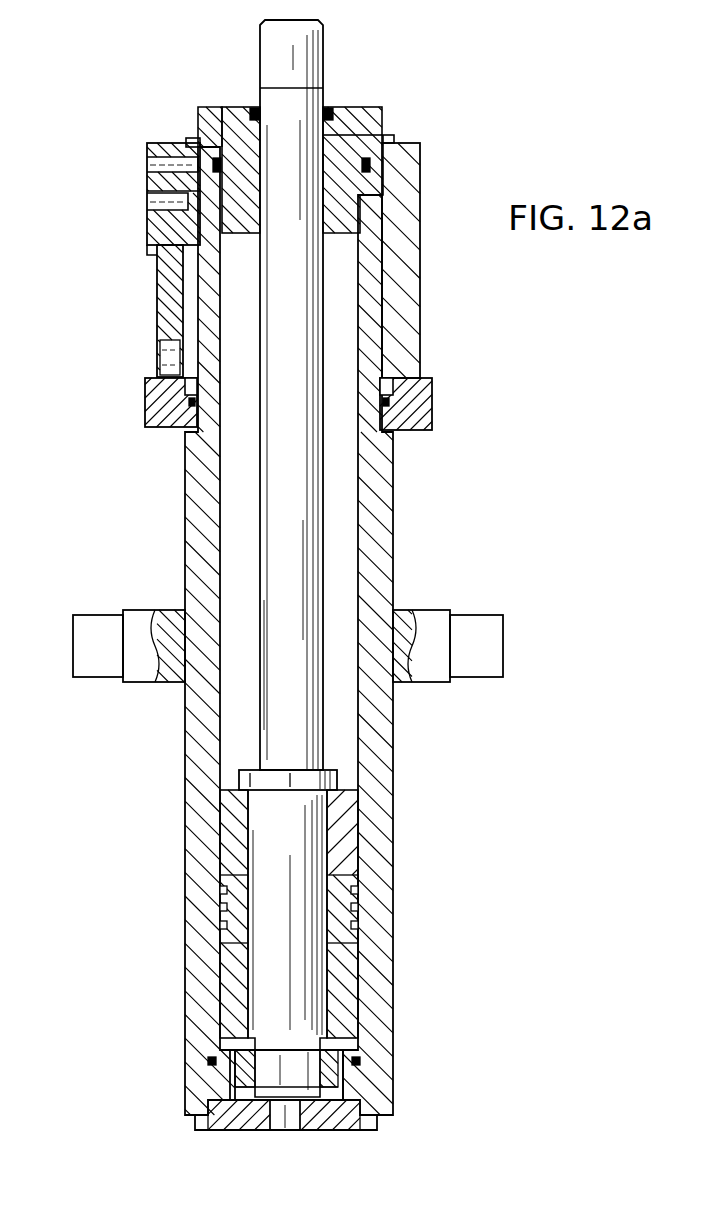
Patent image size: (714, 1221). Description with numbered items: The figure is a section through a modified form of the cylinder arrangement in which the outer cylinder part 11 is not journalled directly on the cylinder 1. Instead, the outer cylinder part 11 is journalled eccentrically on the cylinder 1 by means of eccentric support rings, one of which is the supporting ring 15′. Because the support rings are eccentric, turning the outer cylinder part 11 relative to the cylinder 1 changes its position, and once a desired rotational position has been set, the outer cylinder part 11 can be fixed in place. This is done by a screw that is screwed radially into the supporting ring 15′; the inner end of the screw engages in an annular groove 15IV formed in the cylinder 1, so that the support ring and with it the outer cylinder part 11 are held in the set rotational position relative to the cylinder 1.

The cylinder 1 is at (385, 537).
The outer cylinder part 11 is at (412, 328).
The annular groove 15IV is at (427, 142).
The eccentric support ring 15′ is at (425, 202).